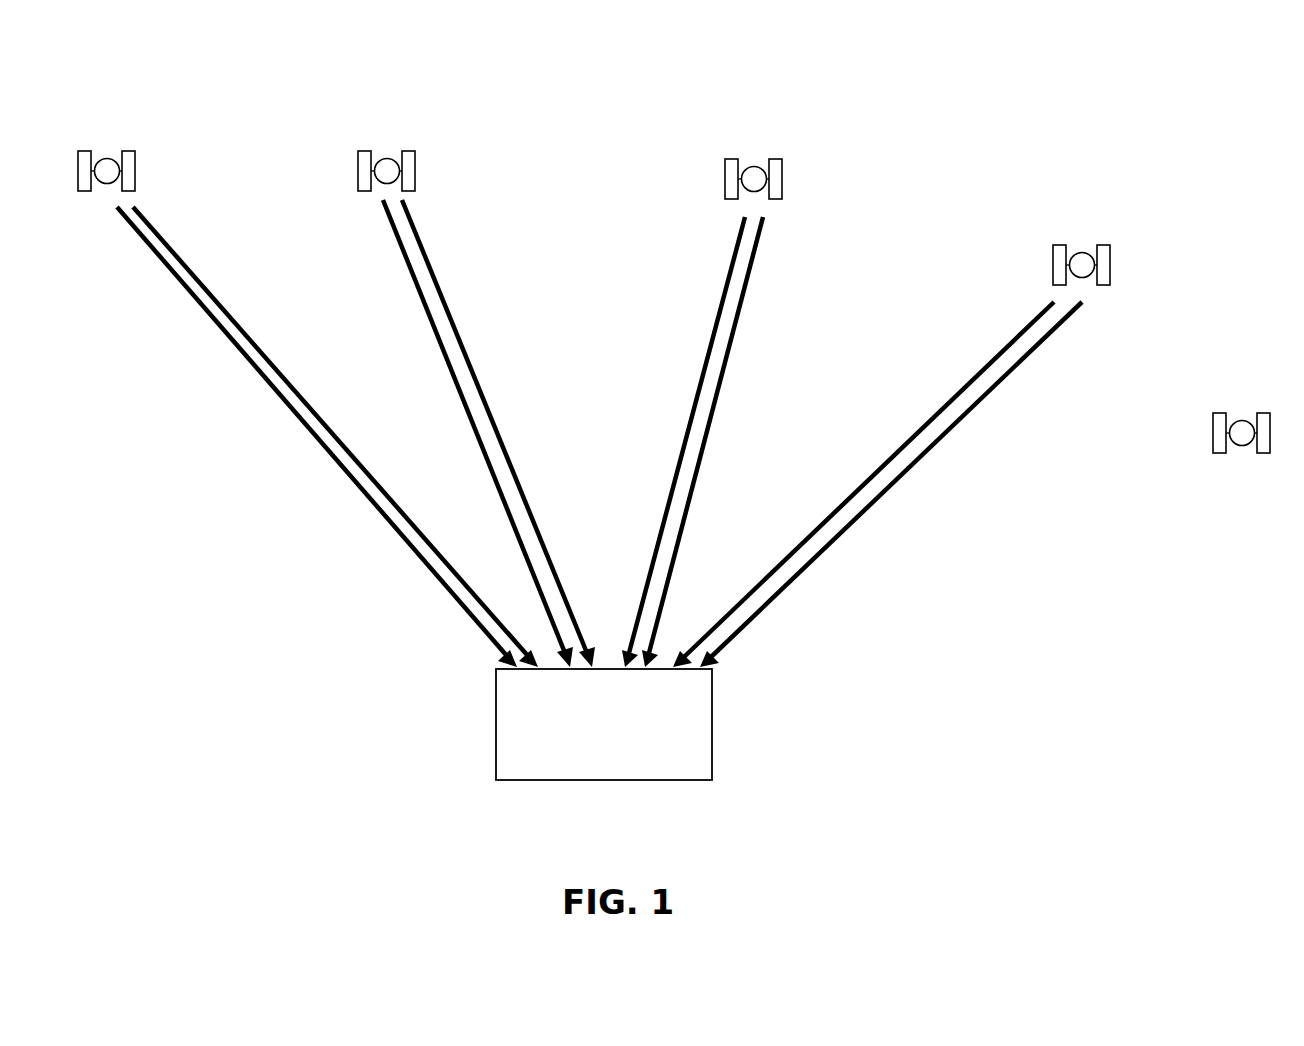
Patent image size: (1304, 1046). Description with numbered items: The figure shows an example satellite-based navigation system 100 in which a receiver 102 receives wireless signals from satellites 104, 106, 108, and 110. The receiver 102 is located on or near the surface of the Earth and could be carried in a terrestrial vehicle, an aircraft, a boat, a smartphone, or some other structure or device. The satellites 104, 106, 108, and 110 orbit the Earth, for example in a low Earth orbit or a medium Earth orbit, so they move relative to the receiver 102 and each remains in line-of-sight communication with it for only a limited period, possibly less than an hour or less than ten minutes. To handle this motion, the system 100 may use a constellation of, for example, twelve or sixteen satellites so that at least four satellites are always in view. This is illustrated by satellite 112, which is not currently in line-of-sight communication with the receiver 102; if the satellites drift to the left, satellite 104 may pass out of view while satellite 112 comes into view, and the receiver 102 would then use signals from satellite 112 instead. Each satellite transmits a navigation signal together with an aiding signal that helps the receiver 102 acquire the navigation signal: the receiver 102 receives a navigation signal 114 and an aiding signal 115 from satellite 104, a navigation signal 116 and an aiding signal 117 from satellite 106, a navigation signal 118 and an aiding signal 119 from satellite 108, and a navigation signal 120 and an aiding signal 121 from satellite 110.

The satellite-based navigation system 100 is at (1150, 153).
The receiver 102 is at (496, 725).
The satellite 104 is at (103, 158).
The satellite 106 is at (384, 158).
The satellite 108 is at (752, 166).
The satellite 110 is at (1080, 252).
The satellite 112 is at (1238, 420).
The navigation signal 114 is at (135, 232).
The aiding signal 115 is at (168, 243).
The navigation signal 116 is at (400, 238).
The aiding signal 117 is at (423, 237).
The navigation signal 118 is at (737, 245).
The aiding signal 119 is at (755, 265).
The navigation signal 120 is at (998, 352).
The aiding signal 121 is at (1038, 350).